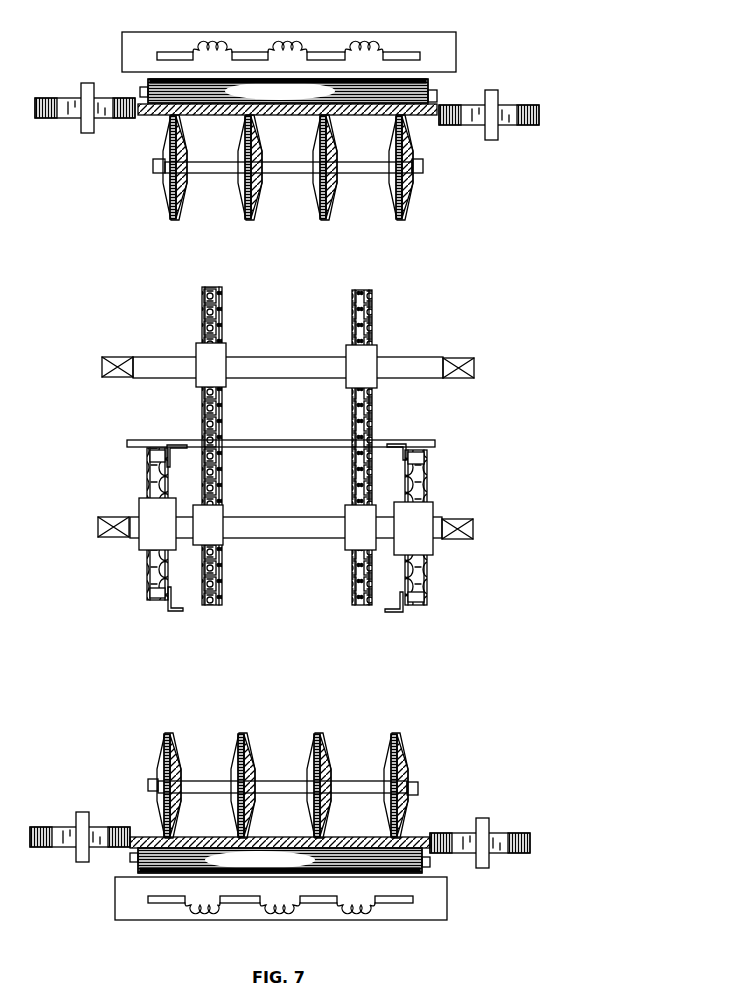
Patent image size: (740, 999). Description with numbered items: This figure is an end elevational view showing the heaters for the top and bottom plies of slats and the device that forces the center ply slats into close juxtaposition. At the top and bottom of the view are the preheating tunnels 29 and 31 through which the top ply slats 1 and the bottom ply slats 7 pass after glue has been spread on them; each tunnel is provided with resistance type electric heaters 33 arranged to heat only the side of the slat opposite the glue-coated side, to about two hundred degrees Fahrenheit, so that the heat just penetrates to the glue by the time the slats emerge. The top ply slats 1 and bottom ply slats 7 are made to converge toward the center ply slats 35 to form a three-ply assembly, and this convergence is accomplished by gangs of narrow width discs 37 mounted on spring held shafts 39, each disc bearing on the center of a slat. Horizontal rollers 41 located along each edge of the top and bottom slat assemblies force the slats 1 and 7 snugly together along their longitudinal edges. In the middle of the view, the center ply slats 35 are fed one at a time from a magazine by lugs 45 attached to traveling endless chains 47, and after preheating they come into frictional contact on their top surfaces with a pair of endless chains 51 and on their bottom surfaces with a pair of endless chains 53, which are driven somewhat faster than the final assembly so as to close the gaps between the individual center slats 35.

The top ply slats 1 is at (380, 113).
The bottom ply slats 7 is at (333, 838).
The preheating tunnel 29 is at (172, 33).
The preheating tunnel 31 is at (237, 920).
The resistance type electric heaters 33 is at (397, 53).
The center ply slats 35 is at (233, 440).
The narrow width discs 37 is at (242, 197).
The spring held shafts 39 is at (425, 170).
The horizontal rollers 41 is at (72, 98).
The lugs 45 is at (393, 447).
The traveling endless chains 47 is at (147, 599).
The endless chains 51 is at (222, 298).
The endless chains 53 is at (350, 577).